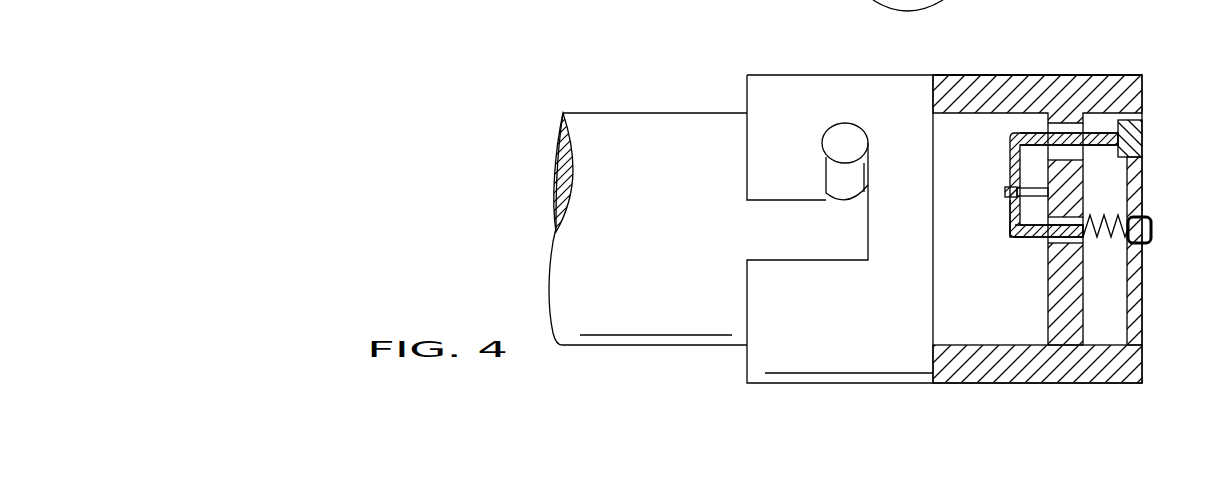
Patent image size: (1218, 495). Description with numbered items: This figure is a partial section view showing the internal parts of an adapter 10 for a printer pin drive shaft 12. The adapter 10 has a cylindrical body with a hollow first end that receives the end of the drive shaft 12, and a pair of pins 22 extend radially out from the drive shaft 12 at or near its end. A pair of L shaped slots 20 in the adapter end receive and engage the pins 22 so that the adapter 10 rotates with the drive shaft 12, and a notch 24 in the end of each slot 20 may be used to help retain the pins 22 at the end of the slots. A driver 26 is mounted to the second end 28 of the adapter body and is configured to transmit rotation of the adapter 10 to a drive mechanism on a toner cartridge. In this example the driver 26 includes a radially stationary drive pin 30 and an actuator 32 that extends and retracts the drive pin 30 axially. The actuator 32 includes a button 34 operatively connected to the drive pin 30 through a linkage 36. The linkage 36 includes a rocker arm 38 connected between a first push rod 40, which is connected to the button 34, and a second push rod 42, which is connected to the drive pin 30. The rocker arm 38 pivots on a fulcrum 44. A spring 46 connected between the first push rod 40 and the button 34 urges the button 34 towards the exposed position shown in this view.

The adapter 10 is at (1085, 50).
The printer pin drive shaft 12 is at (642, 122).
The L shaped slots 20 is at (775, 259).
The pins 22 is at (842, 142).
The notch 24 is at (822, 150).
The driver 26 is at (1003, 264).
The second end 28 is at (1133, 378).
The drive pin 30 is at (1143, 139).
The actuator 32 is at (1009, 246).
The button 34 is at (1152, 230).
The linkage 36 is at (992, 178).
The rocker arm 38 is at (1006, 221).
The first push rod 40 is at (1031, 236).
The second push rod 42 is at (1024, 142).
The fulcrum 44 is at (1012, 193).
The spring 46 is at (1107, 240).